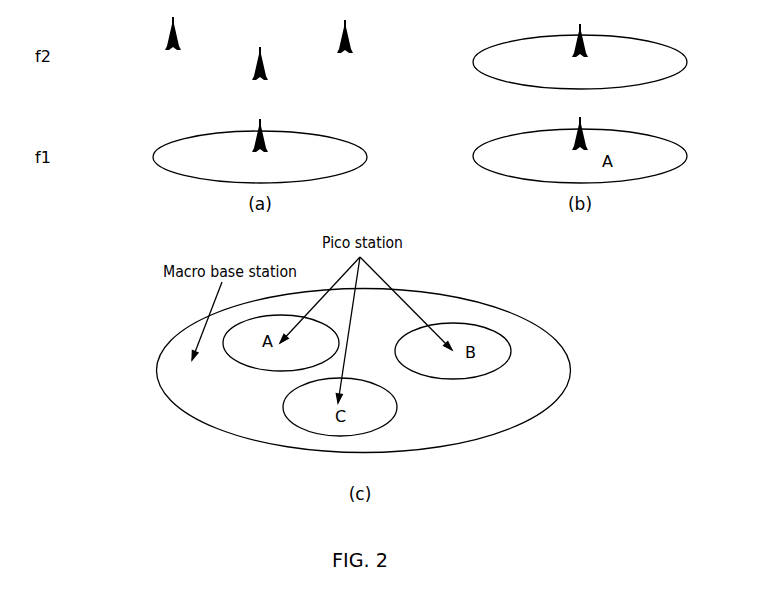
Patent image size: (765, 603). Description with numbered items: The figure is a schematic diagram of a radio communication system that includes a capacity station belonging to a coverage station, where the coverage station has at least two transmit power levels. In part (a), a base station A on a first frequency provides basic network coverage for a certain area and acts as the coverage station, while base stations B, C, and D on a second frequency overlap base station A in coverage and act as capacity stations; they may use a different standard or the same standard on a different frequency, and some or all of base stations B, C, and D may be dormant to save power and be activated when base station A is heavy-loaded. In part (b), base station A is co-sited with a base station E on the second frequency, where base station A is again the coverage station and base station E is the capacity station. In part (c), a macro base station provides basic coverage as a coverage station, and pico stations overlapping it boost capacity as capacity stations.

The base station A is at (272, 145).
The base station B is at (271, 74).
The base station C is at (358, 44).
The base station D is at (186, 43).
The base station E is at (592, 49).